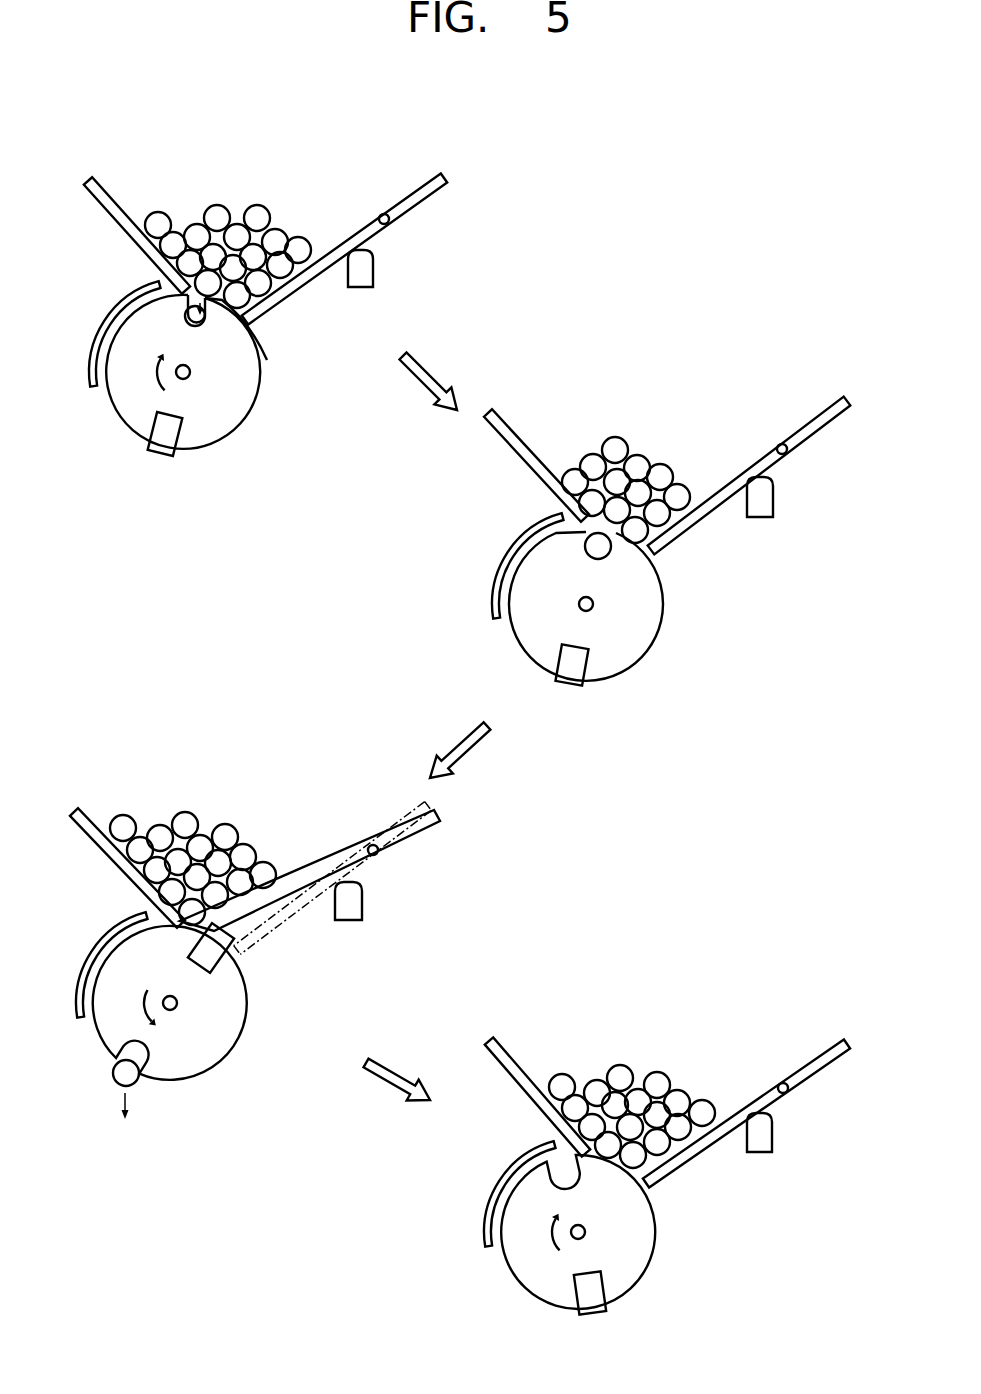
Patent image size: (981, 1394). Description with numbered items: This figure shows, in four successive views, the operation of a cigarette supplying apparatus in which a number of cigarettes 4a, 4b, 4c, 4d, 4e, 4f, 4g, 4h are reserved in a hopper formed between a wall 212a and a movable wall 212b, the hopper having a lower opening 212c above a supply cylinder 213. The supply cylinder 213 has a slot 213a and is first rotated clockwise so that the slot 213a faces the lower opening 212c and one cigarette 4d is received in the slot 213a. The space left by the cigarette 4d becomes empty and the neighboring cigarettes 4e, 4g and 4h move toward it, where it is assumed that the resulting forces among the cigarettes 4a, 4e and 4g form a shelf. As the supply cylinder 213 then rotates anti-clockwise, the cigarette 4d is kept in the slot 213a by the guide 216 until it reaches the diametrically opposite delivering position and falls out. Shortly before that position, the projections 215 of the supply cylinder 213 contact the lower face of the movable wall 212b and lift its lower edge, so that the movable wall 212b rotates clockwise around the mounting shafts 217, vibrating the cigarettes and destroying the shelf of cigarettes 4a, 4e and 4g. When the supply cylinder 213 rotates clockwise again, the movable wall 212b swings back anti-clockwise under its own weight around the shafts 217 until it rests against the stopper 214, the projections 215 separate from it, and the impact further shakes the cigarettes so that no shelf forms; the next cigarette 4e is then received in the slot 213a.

The first chute wall 212a is at (112, 197).
The movable wall 212b is at (413, 190).
The lower opening of the hopper 212c is at (362, 397).
The supply cylinder 213 is at (228, 414).
The slot 213a is at (187, 317).
The stopper 214 is at (368, 268).
The projections 215 is at (157, 440).
The guide 216 is at (123, 303).
The mounting shafts 217 is at (380, 217).
The cigarette 4a is at (246, 303).
The cigarette 4b is at (268, 290).
The cigarette 4c is at (300, 244).
The cigarette 4d is at (188, 282).
The cigarette 4e is at (236, 262).
The cigarette 4f is at (282, 256).
The cigarette 4g is at (185, 258).
The cigarette 4h is at (215, 250).